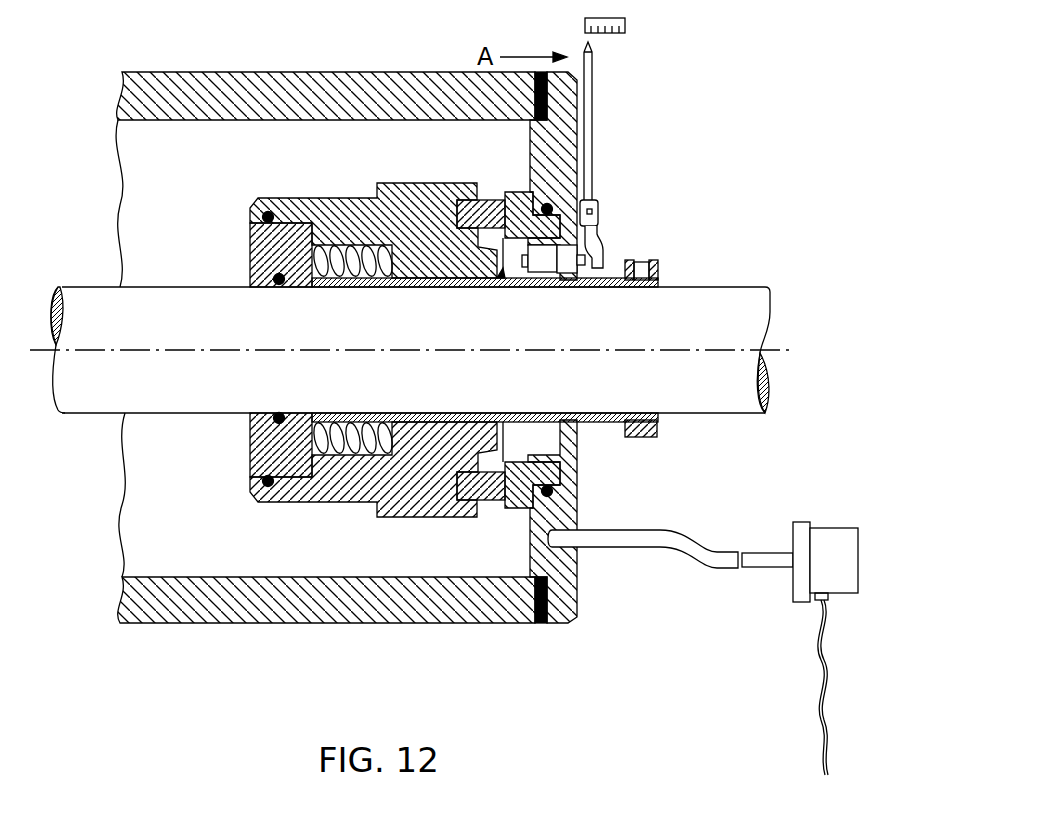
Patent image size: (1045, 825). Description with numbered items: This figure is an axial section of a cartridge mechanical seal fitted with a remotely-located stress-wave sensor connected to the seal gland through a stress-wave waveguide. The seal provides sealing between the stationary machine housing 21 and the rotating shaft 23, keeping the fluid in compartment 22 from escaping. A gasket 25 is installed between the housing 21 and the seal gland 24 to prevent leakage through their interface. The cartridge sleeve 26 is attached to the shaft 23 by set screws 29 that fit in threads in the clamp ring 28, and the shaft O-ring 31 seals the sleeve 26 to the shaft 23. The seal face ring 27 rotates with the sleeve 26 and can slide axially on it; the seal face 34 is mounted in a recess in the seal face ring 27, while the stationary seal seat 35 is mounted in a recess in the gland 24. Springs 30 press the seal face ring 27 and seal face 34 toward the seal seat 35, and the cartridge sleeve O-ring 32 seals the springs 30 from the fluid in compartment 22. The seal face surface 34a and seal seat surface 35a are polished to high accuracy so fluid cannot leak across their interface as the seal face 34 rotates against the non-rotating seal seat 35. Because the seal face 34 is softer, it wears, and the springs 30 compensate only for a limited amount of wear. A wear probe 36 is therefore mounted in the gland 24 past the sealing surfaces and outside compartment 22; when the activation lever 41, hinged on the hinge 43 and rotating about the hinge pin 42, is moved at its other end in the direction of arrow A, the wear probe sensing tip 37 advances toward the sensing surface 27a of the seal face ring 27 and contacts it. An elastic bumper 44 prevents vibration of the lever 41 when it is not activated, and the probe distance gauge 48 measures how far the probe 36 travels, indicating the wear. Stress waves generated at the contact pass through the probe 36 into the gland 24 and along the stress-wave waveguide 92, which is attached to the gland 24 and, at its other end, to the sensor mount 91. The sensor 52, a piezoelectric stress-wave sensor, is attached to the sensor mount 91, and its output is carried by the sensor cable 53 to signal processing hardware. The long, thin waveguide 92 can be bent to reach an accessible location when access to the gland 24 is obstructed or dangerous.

The stationary machine housing 21 is at (124, 96).
The compartment 22 is at (163, 187).
The rotating shaft 23 is at (82, 406).
The seal gland 24 is at (572, 617).
The gasket 25 is at (540, 625).
The cartridge sleeve 26 is at (251, 263).
The seal face ring 27 is at (402, 183).
The sensing surface 27a is at (516, 284).
The clamp ring 28 is at (637, 437).
The set screws 29 is at (660, 270).
The springs 30 is at (332, 420).
The shaft O-ring 31 is at (277, 414).
The cartridge sleeve O-ring 32 is at (250, 481).
The seal face 34 is at (505, 213).
The seal face surface 34a is at (522, 197).
The seal seat 35 is at (520, 498).
The seal seat surface 35a is at (498, 504).
The wear probe 36 is at (582, 288).
The wear probe sensing tip 37 is at (524, 262).
The activation lever 41 is at (602, 253).
The hinge pin 42 is at (597, 213).
The hinge 43 is at (598, 203).
The elastic bumper 44 is at (585, 115).
The probe distance gauge 48 is at (585, 22).
The sensor 52 is at (825, 533).
The sensor cable 53 is at (822, 745).
The sensor mount 91 is at (793, 593).
The stress-wave waveguide 92 is at (663, 542).